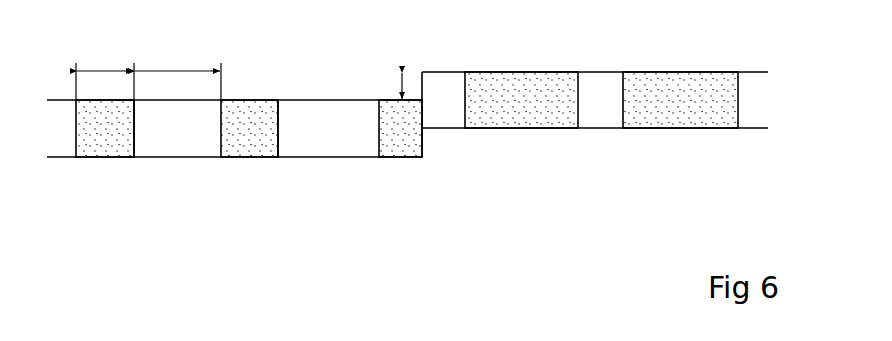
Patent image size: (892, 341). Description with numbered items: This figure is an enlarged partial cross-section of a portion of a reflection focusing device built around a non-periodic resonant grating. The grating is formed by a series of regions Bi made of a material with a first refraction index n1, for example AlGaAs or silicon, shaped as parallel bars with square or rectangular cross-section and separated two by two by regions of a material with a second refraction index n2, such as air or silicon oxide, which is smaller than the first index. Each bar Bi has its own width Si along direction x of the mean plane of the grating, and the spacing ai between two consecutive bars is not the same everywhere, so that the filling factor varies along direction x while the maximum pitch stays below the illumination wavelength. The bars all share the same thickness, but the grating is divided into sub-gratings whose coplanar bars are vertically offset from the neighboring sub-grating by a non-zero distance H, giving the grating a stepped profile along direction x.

The region Bi is at (103, 146).
The first refraction index n1 is at (249, 128).
The second refraction index n2 is at (328, 128).
The width Si is at (103, 70).
The spacing ai is at (173, 70).
The distance H is at (397, 80).